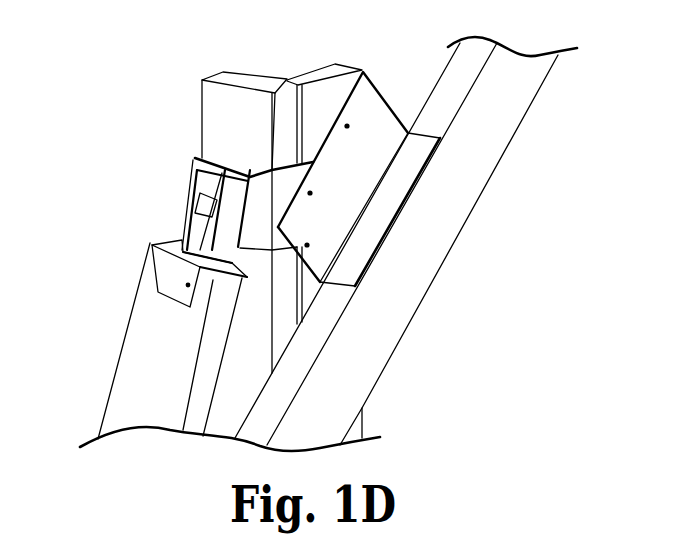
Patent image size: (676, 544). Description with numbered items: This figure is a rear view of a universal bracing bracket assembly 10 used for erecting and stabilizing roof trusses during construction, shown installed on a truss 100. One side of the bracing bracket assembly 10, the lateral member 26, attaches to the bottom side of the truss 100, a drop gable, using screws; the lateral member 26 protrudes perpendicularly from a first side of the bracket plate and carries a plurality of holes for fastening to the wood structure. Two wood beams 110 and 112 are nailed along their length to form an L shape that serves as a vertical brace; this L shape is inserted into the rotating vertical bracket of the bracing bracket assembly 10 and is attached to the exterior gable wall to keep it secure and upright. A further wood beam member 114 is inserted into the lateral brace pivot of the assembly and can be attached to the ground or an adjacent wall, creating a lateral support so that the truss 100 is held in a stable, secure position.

The universal bracing bracket assembly 10 is at (408, 132).
The lateral member 26 is at (420, 153).
The truss 100 is at (441, 267).
The wood beam 110 is at (312, 65).
The wood beam 112 is at (240, 72).
The wood beam member 114 is at (130, 325).